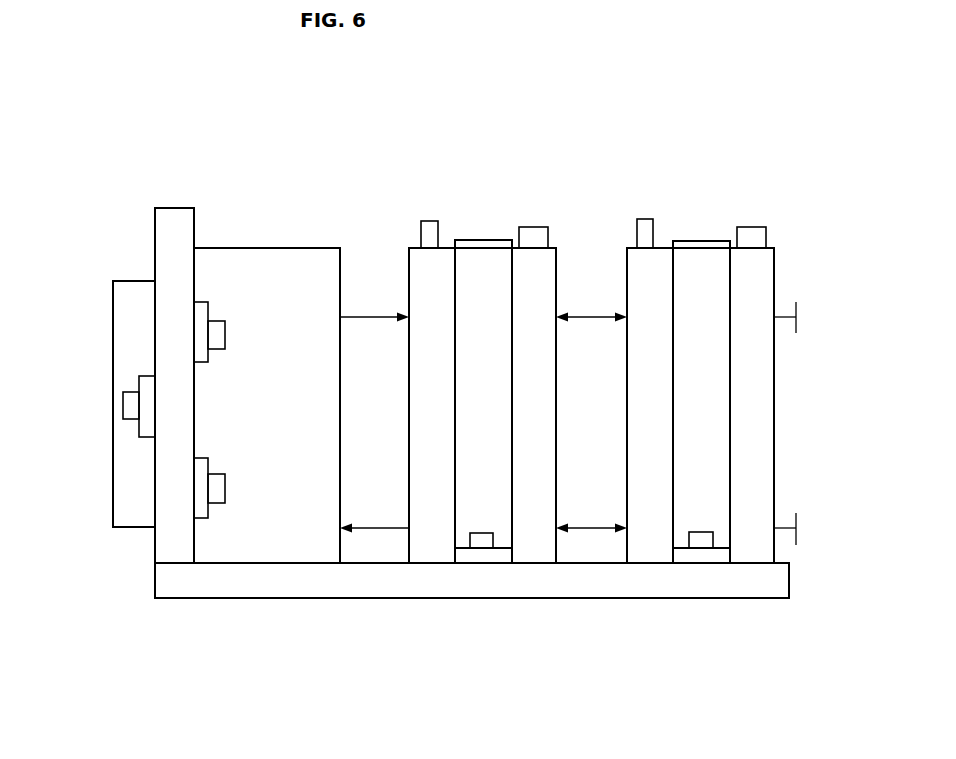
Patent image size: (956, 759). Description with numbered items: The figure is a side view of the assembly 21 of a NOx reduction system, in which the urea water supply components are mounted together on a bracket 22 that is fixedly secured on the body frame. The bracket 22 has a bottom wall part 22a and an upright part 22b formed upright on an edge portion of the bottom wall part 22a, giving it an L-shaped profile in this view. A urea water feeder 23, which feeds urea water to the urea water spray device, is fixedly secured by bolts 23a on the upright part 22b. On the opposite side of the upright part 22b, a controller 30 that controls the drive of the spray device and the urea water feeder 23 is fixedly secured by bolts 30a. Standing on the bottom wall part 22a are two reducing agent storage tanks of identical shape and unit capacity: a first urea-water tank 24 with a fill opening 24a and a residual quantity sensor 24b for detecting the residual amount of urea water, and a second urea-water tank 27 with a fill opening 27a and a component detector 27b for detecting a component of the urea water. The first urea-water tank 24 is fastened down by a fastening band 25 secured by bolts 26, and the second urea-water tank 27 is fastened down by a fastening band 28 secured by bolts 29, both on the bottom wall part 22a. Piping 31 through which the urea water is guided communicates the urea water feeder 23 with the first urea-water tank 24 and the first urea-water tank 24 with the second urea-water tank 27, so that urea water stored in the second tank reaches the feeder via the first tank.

The assembly 21 is at (540, 605).
The bracket 22 is at (258, 609).
The bottom wall part 22a is at (309, 598).
The upright part 22b is at (156, 255).
The urea water feeder 23 is at (285, 247).
The bolts 23a is at (216, 330).
The first urea-water tank 24 is at (561, 272).
The fill opening 24a is at (534, 227).
The residual quantity sensor 24b is at (431, 221).
The fastening band 25 is at (473, 443).
The bolts 26 is at (483, 543).
The second urea-water tank 27 is at (781, 398).
The fill opening 27a is at (758, 228).
The component detector 27b is at (647, 227).
The fastening band 28 is at (707, 427).
The bolts 29 is at (698, 542).
The controller 30 is at (115, 443).
The bolts 30a is at (132, 405).
The piping 31 is at (362, 317).